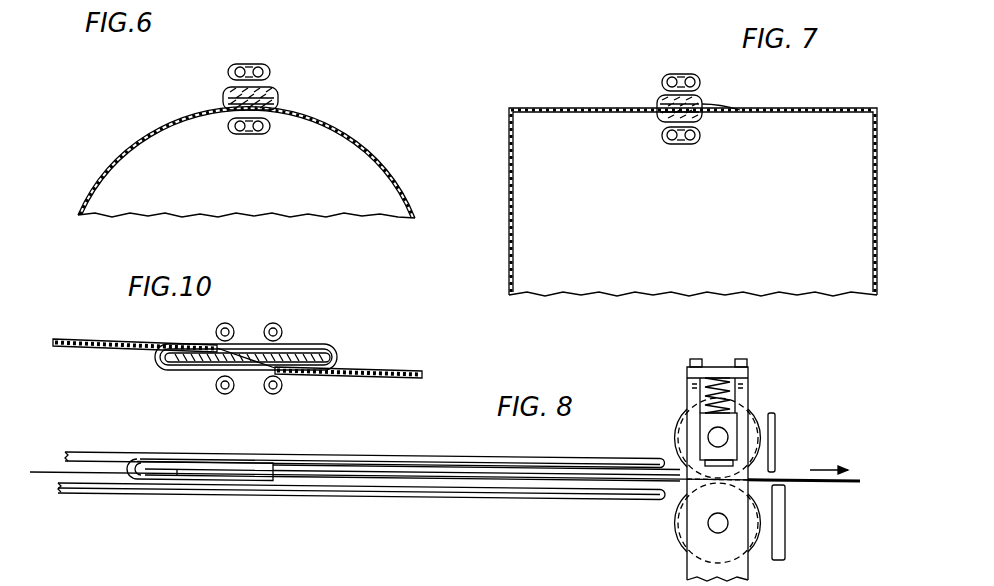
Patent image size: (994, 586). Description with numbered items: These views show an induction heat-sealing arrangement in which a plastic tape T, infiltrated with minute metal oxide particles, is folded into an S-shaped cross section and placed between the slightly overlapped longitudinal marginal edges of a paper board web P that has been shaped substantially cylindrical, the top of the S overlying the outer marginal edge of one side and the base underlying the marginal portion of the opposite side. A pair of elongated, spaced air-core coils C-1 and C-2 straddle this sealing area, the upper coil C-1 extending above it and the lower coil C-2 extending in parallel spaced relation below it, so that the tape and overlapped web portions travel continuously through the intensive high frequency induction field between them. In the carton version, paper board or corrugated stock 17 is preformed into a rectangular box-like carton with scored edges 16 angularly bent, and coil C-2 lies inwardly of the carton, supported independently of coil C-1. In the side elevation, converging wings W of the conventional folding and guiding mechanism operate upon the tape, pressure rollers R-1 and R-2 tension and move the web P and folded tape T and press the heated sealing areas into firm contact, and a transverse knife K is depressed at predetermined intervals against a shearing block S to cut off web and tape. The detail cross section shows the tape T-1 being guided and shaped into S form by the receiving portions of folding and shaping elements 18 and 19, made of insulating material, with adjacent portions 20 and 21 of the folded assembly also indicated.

In FIG. 6, the paper board web P is at (118, 163).
In FIG. 6, the plastic tape T is at (224, 95).
In FIG. 7, the plastic tape T is at (657, 100).
In FIG. 6, the upper air-core coil C-1 is at (270, 72).
In FIG. 7, the upper air-core coil C-1 is at (700, 80).
In FIG. 10, the upper air-core coil C-1 is at (236, 323).
In FIG. 8, the upper air-core coil C-1 is at (396, 440).
In FIG. 6, the lower air-core coil C-2 is at (268, 130).
In FIG. 7, the lower air-core coil C-2 is at (700, 133).
In FIG. 10, the lower air-core coil C-2 is at (271, 393).
In FIG. 8, the lower air-core coil C-2 is at (417, 493).
In FIG. 7, the scored edges 16 is at (509, 126).
In FIG. 7, the paper board or corrugated stock 17 is at (513, 232).
In FIG. 10, the folding and shaping element 18 is at (340, 354).
In FIG. 10, the folding and shaping element 19 is at (156, 357).
In FIG. 10, the inner hatched core 20 is at (220, 347).
In FIG. 10, the strip junction 21 is at (288, 366).
In FIG. 10, the tape T-1 is at (188, 368).
In FIG. 8, the converging wings W is at (214, 472).
In FIG. 8, the pressure roller R-1 is at (676, 433).
In FIG. 8, the pressure roller R-2 is at (677, 522).
In FIG. 8, the transverse knife K is at (777, 428).
In FIG. 8, the shearing block S is at (786, 518).